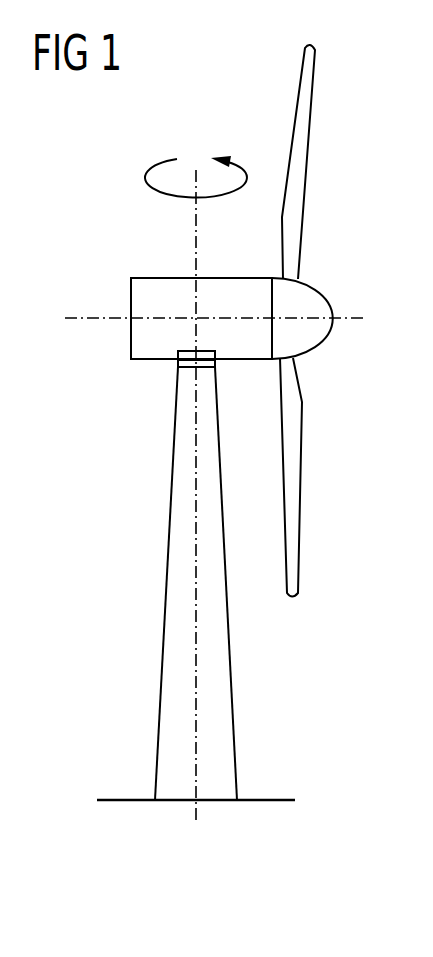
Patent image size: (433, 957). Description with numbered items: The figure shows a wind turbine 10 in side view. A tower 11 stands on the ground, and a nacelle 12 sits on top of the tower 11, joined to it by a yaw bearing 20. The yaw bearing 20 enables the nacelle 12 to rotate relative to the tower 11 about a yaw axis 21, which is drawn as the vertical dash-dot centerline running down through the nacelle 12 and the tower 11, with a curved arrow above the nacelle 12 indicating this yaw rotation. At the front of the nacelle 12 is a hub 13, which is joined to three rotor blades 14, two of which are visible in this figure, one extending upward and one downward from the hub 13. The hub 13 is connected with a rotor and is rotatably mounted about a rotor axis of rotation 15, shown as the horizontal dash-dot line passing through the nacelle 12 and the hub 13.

The wind turbine 10 is at (106, 496).
The tower 11 is at (213, 653).
The nacelle 12 is at (177, 277).
The hub 13 is at (323, 300).
The rotor blades 14 is at (300, 157).
The rotor axis of rotation 15 is at (80, 318).
The yaw bearing 20 is at (190, 356).
The yaw axis 21 is at (193, 558).